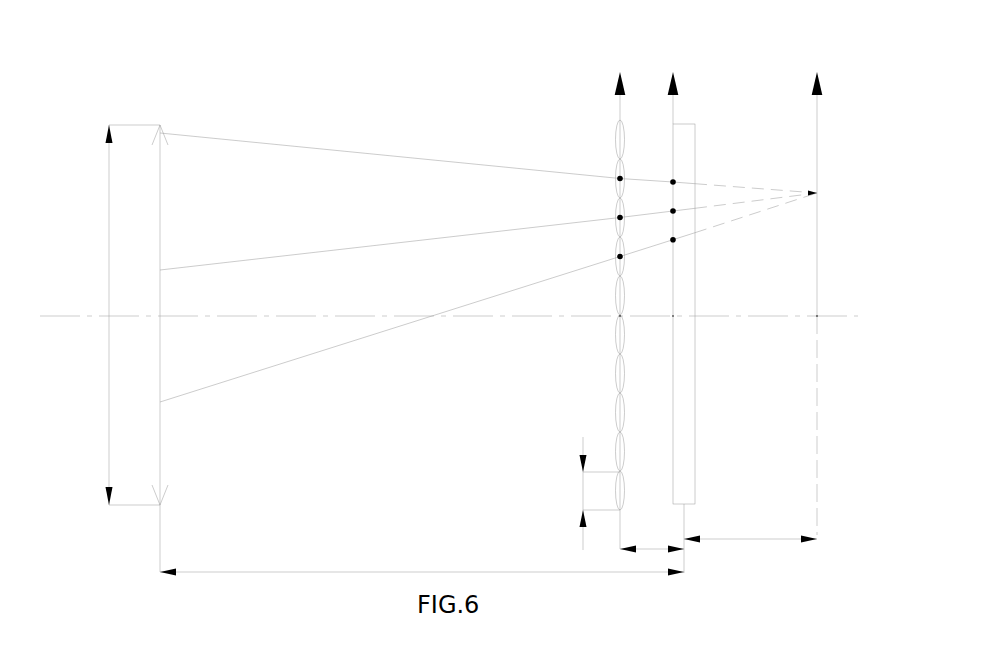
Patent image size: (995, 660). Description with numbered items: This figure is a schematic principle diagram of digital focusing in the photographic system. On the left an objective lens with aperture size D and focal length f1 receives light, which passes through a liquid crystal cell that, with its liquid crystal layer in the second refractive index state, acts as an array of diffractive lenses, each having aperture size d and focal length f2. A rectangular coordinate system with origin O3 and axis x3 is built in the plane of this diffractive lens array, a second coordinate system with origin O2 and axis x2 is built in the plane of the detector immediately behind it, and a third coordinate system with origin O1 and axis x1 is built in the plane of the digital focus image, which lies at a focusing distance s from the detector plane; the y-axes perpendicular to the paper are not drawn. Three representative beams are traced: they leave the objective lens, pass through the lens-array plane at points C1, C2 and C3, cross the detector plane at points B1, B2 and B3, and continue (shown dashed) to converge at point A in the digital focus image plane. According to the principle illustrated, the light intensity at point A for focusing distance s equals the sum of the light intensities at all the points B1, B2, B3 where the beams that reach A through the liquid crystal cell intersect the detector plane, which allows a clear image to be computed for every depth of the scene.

The point A is at (831, 187).
The point B1 is at (661, 169).
The point B2 is at (661, 198).
The point B3 is at (661, 227).
The point C1 is at (606, 165).
The point C2 is at (606, 205).
The point C3 is at (606, 246).
The origin O1 is at (803, 300).
The origin O2 is at (655, 299).
The origin O3 is at (601, 299).
The x1 axis x1 is at (826, 289).
The x2 axis x2 is at (682, 308).
The x3 axis x3 is at (629, 296).
The aperture size of the objective lens D is at (120, 315).
The aperture size of the liquid crystal cell d is at (587, 493).
The focal length of the objective lens f1 is at (422, 560).
The focal length of the liquid crystal cell f2 is at (652, 534).
The focusing distance s is at (750, 528).